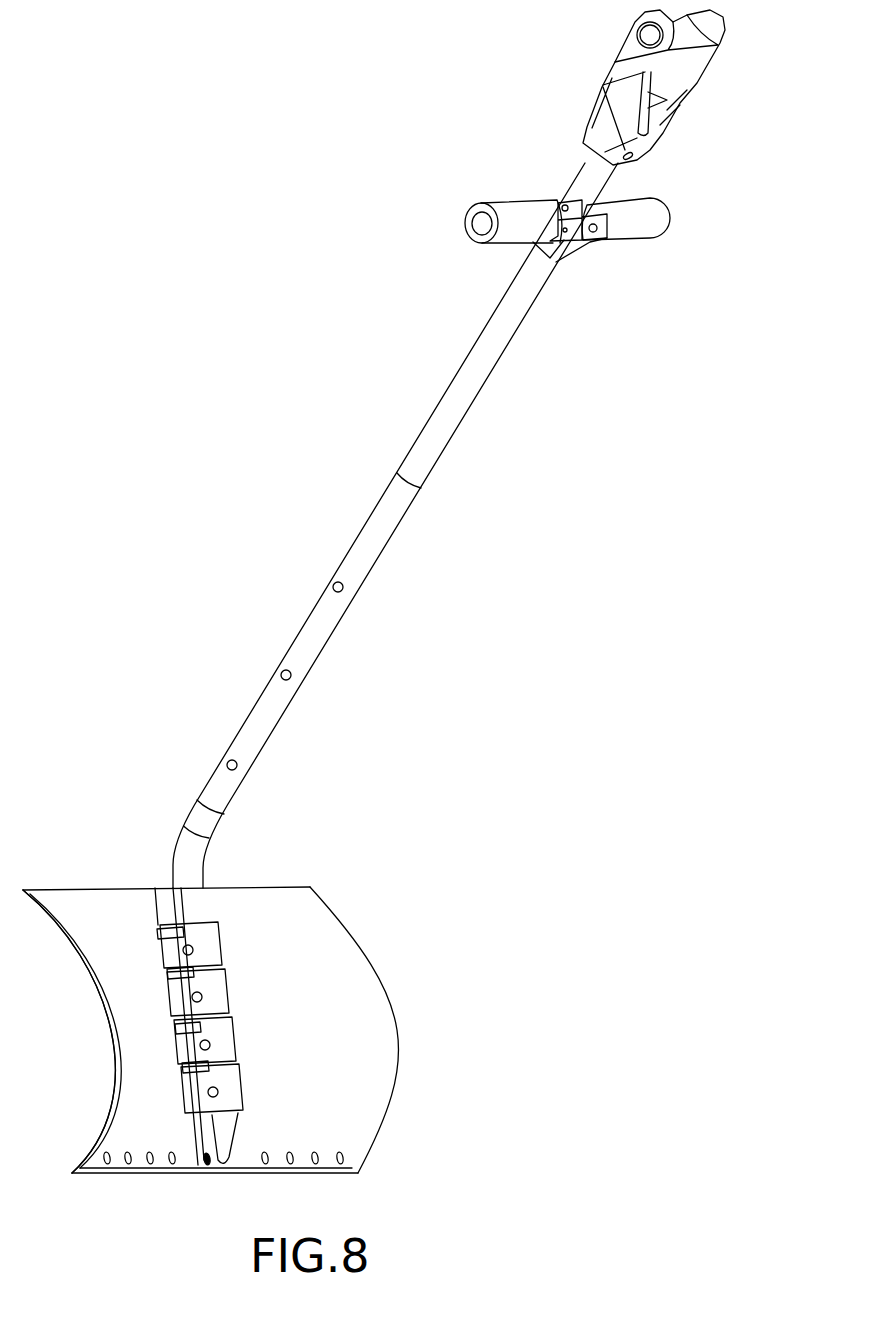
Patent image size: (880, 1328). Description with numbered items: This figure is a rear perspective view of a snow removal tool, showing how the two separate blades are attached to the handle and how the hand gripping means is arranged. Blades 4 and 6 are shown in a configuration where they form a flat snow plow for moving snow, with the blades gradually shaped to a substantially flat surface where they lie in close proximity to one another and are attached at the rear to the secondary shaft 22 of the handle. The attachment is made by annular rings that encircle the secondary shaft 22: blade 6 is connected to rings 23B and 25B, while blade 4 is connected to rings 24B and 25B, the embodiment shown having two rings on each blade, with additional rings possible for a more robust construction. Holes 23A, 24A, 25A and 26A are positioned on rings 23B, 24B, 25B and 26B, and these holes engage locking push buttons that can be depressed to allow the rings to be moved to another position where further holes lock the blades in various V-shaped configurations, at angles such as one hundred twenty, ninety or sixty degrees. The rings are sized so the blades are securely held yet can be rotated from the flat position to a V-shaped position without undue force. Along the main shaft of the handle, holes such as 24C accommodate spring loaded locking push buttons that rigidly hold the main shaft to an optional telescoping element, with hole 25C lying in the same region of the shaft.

The blade 4 is at (332, 897).
The blade 6 is at (107, 888).
The secondary shaft 22 is at (193, 917).
The hole 23A is at (192, 948).
The hole 24A is at (422, 487).
The hole 25A is at (210, 1043).
The hole 26A is at (218, 1090).
The ring 23B is at (197, 935).
The ring 24B is at (343, 590).
The ring 25B is at (197, 1054).
The ring 26B is at (217, 1108).
The hole 24C is at (290, 678).
The shaft hole 25C is at (237, 765).